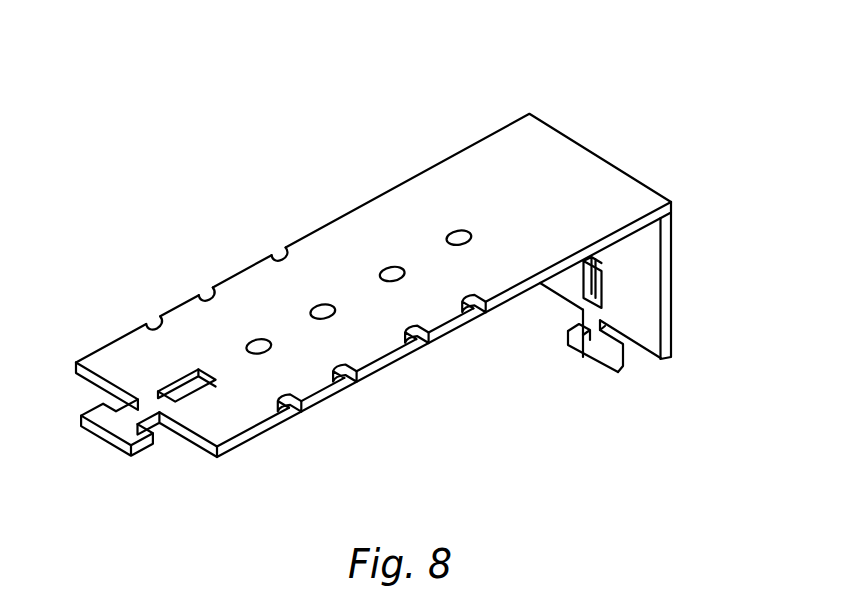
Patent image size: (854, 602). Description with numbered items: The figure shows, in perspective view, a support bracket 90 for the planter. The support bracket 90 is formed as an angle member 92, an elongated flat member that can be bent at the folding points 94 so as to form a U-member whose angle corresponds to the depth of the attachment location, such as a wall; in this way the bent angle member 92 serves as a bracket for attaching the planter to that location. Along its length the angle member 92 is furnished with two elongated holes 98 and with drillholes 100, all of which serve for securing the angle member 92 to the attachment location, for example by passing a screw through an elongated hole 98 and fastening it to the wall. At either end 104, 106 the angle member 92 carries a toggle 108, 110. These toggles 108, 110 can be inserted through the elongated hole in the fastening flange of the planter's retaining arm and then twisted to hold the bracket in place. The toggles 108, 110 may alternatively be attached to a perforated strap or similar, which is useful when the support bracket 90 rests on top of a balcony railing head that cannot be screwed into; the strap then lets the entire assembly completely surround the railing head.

The support bracket 90 is at (343, 176).
The angle member 92 is at (507, 140).
The folding points 94 is at (285, 257).
The elongated holes 98 is at (178, 403).
The drillholes 100 is at (390, 267).
The end 104 is at (213, 457).
The end 106 is at (624, 348).
The toggle 108 is at (82, 420).
The toggle 110 is at (594, 360).